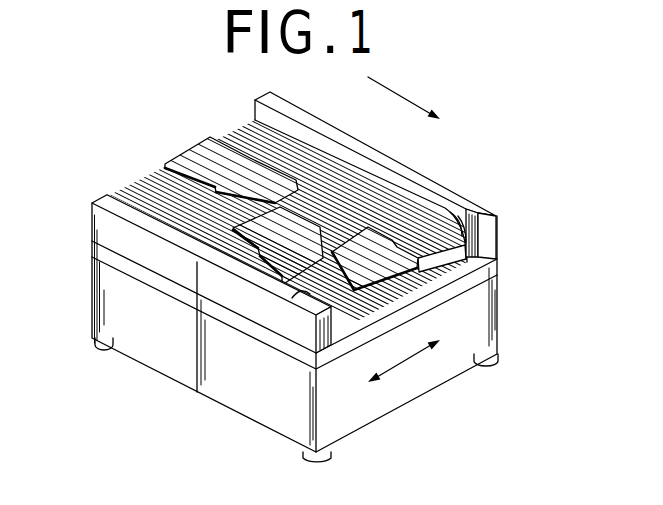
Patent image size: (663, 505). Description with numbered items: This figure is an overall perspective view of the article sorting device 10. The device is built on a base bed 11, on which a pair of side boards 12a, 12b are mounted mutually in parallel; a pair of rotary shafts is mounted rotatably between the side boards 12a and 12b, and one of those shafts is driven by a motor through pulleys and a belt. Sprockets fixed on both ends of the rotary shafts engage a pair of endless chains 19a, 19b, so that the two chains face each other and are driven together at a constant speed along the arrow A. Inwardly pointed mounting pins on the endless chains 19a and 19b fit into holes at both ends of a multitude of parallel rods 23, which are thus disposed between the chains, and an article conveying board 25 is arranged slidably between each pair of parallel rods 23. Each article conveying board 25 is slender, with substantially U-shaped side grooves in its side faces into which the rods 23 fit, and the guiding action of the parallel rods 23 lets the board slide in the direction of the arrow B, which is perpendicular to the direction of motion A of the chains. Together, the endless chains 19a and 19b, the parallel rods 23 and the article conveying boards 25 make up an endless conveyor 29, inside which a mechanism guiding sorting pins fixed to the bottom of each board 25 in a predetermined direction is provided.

The conveying apparatus 10 is at (288, 253).
The base bed 11 is at (397, 400).
The side board 12a is at (425, 188).
The side board 12b is at (101, 201).
The endless chain 19a is at (458, 222).
The endless chain 19b is at (297, 294).
The parallel rod 23 is at (160, 193).
The article conveying board 25 is at (225, 171).
The endless conveyor 29 is at (351, 198).
The direction of motion of the endless chains A is at (402, 94).
The sliding direction of the article conveying board B is at (407, 357).